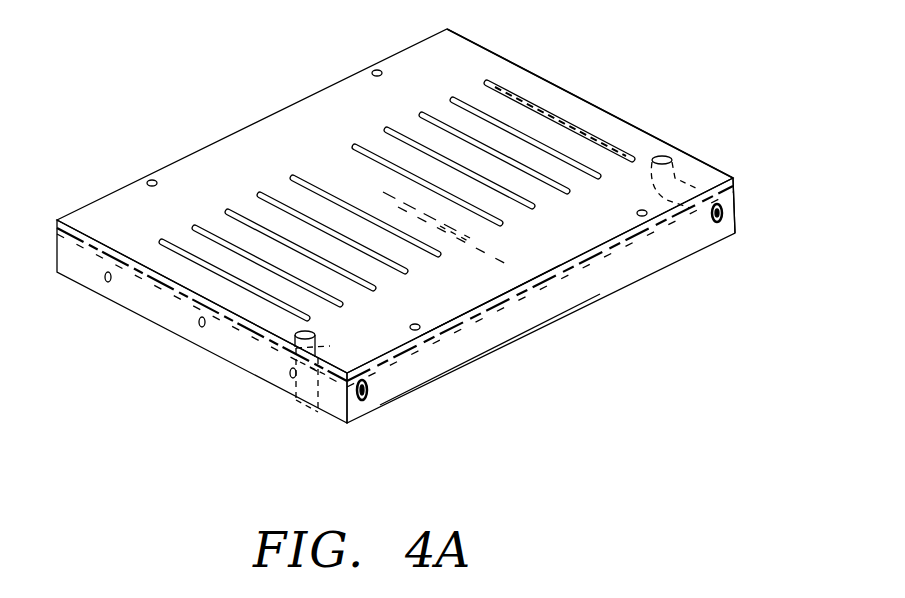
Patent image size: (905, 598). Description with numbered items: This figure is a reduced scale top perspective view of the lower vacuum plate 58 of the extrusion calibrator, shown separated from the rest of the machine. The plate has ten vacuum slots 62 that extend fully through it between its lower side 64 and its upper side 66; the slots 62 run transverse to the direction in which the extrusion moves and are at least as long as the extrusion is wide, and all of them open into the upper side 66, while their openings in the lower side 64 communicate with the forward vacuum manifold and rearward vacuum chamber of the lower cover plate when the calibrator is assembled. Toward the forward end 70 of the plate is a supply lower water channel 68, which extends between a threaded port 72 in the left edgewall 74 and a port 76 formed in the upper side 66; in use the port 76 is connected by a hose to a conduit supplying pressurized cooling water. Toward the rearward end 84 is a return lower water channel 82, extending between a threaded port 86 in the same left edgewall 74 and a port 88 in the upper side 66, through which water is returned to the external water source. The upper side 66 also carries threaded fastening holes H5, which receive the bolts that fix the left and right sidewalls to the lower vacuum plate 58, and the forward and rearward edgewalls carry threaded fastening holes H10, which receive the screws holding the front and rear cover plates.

The lower vacuum plate 58 is at (230, 362).
The vacuum slots 62 is at (526, 43).
The lower side 64 is at (427, 386).
The upper side 66 is at (488, 285).
The supply lower water channel 68 is at (318, 418).
The forward end 70 is at (137, 298).
The threaded port 72 is at (370, 394).
The left edgewall 74 is at (470, 345).
The port 76 is at (315, 331).
The return lower water channel 82 is at (729, 176).
The rearward end 84 is at (598, 108).
The threaded port 86 is at (727, 215).
The port 88 is at (662, 148).
The threaded fastening holes H5 is at (152, 180).
The threaded fastening holes H10 is at (105, 277).